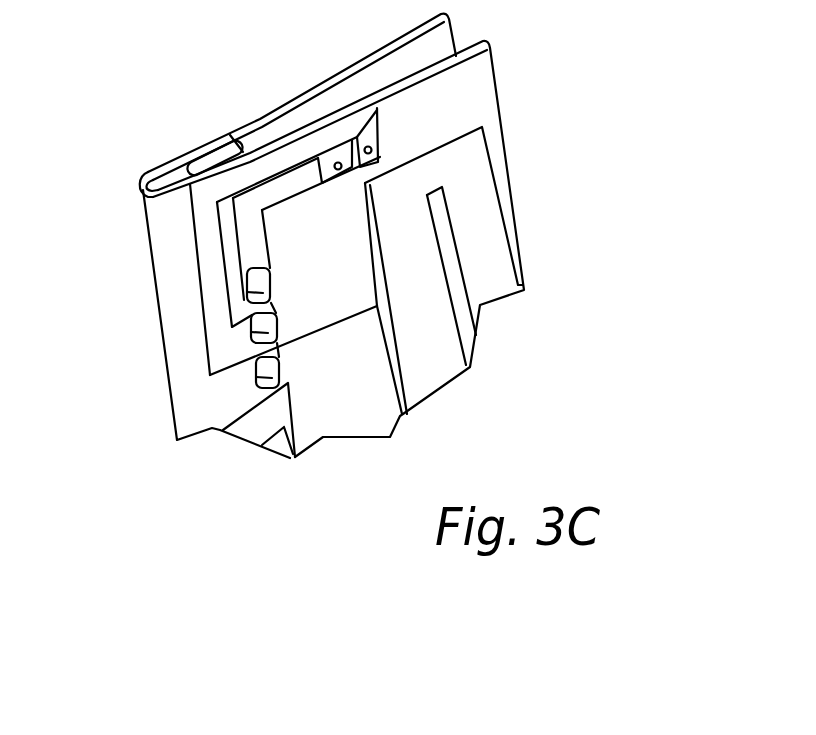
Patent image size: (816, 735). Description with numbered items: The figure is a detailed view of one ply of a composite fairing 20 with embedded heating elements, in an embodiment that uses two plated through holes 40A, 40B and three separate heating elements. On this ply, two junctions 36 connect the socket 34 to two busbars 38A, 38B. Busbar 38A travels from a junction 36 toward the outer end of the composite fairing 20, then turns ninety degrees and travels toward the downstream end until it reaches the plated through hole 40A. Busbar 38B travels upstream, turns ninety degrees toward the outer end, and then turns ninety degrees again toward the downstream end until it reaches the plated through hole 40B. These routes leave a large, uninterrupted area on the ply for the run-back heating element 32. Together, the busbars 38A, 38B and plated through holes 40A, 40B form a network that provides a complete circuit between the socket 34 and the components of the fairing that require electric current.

The composite fairing 20 is at (547, 92).
The run-back heating element 32 is at (367, 400).
The socket 34 is at (172, 176).
The junctions 36 is at (248, 302).
The busbar 38A is at (255, 250).
The busbar 38B is at (207, 232).
The plated through hole 40A is at (338, 162).
The plated through hole 40B is at (368, 147).